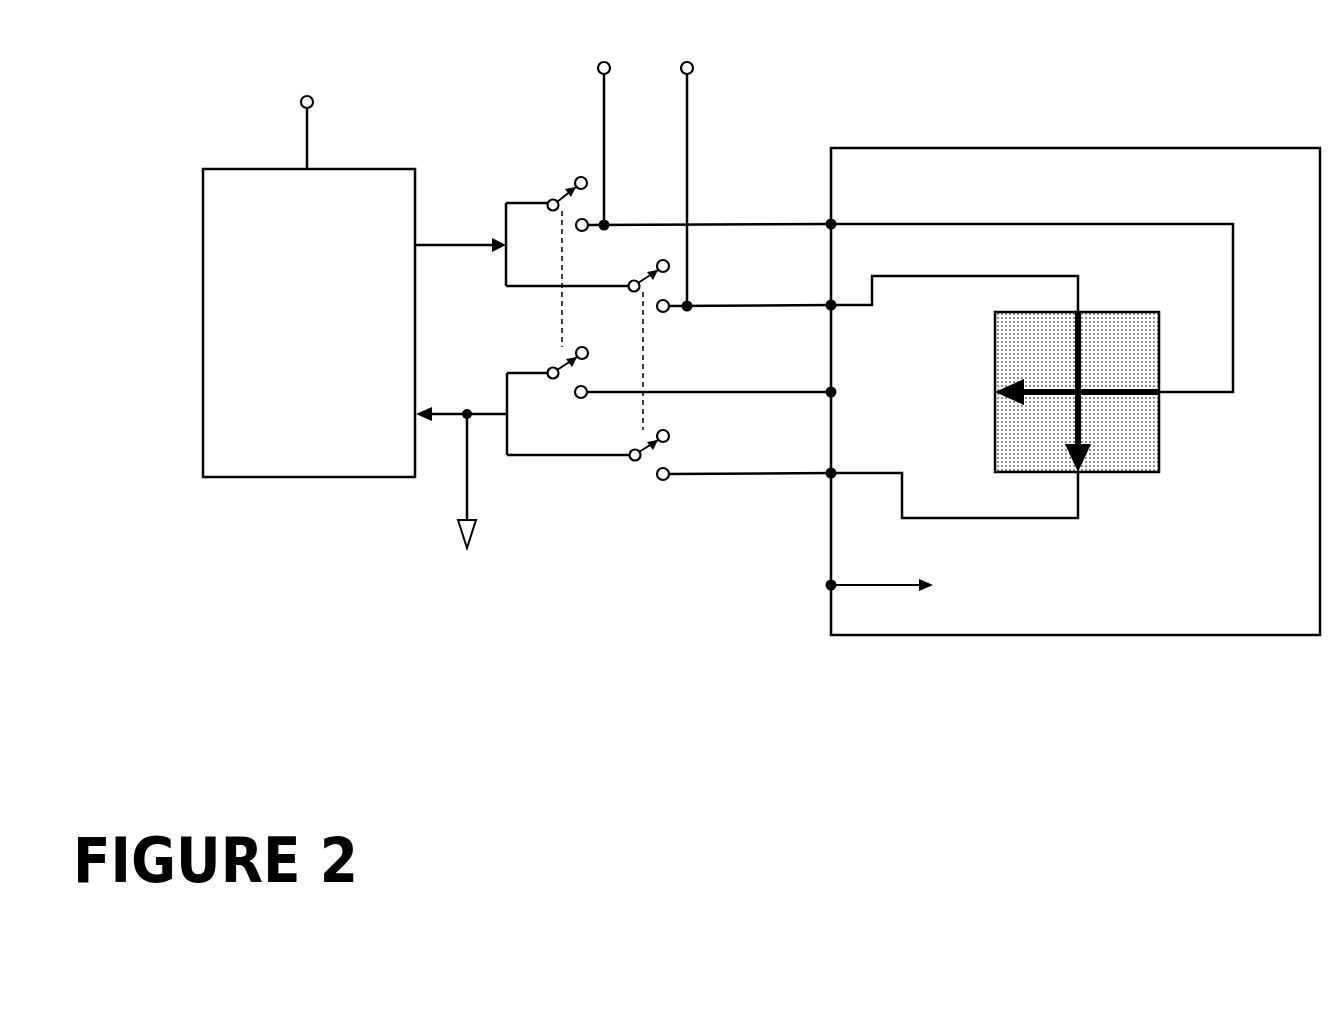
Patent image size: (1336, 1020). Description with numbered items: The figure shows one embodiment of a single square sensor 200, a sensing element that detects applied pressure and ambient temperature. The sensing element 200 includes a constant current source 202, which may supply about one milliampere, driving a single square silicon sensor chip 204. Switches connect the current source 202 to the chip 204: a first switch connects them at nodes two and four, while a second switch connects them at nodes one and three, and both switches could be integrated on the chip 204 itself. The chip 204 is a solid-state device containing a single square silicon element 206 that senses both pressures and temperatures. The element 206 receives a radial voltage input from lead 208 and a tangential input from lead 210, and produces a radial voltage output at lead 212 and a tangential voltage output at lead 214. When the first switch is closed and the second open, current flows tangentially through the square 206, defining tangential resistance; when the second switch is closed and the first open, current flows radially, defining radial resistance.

The single square sensor 200 is at (150, 611).
The constant current source 202 is at (309, 268).
The single square silicon sensor chip 204 is at (1066, 391).
The single square silicon element 206 is at (1115, 312).
The lead 208 is at (721, 212).
The lead 210 is at (721, 294).
The lead 212 is at (724, 382).
The lead 214 is at (724, 464).